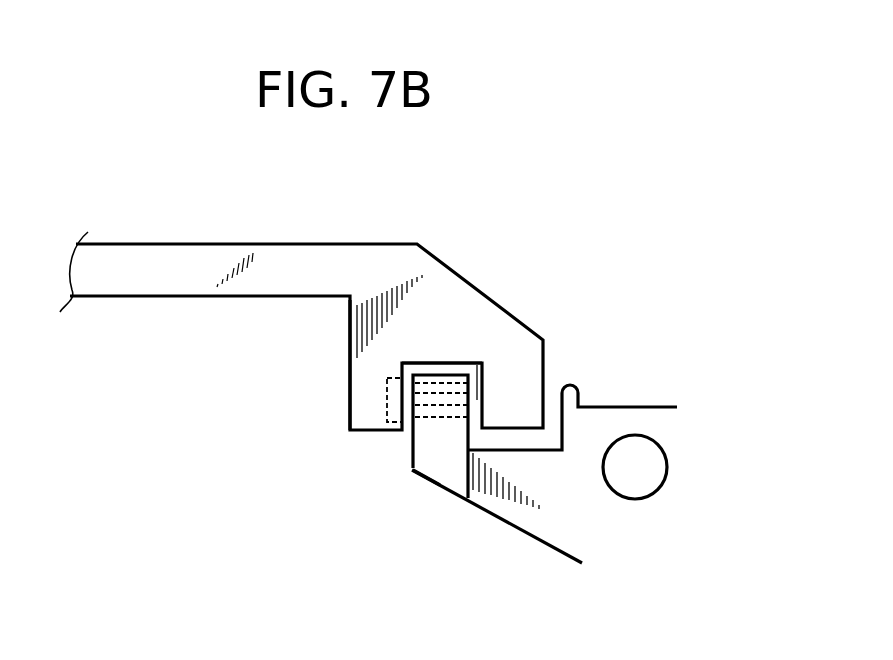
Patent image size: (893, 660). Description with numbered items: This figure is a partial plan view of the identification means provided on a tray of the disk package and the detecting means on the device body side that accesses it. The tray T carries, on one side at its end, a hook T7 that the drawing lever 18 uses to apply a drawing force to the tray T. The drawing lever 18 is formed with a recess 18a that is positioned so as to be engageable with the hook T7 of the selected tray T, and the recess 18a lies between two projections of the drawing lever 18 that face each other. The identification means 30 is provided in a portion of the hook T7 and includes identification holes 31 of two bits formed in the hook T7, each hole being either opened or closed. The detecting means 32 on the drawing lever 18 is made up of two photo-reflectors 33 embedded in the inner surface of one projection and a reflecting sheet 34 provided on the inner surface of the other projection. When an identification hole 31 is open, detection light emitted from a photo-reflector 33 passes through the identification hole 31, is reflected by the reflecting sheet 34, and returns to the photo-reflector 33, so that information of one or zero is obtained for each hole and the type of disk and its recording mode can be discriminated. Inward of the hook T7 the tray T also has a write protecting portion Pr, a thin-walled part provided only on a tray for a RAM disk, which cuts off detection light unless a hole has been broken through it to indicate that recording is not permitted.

The drawing lever 18 is at (142, 283).
The recess 18a is at (447, 362).
The detecting means 32 is at (350, 373).
The photo-reflector 33 is at (387, 383).
The reflecting sheet 34 is at (477, 397).
The identification hole 31 is at (438, 391).
The identification means 30 is at (450, 414).
The hook T7 is at (437, 465).
The tray T is at (550, 527).
The write protecting portion Pr is at (638, 462).